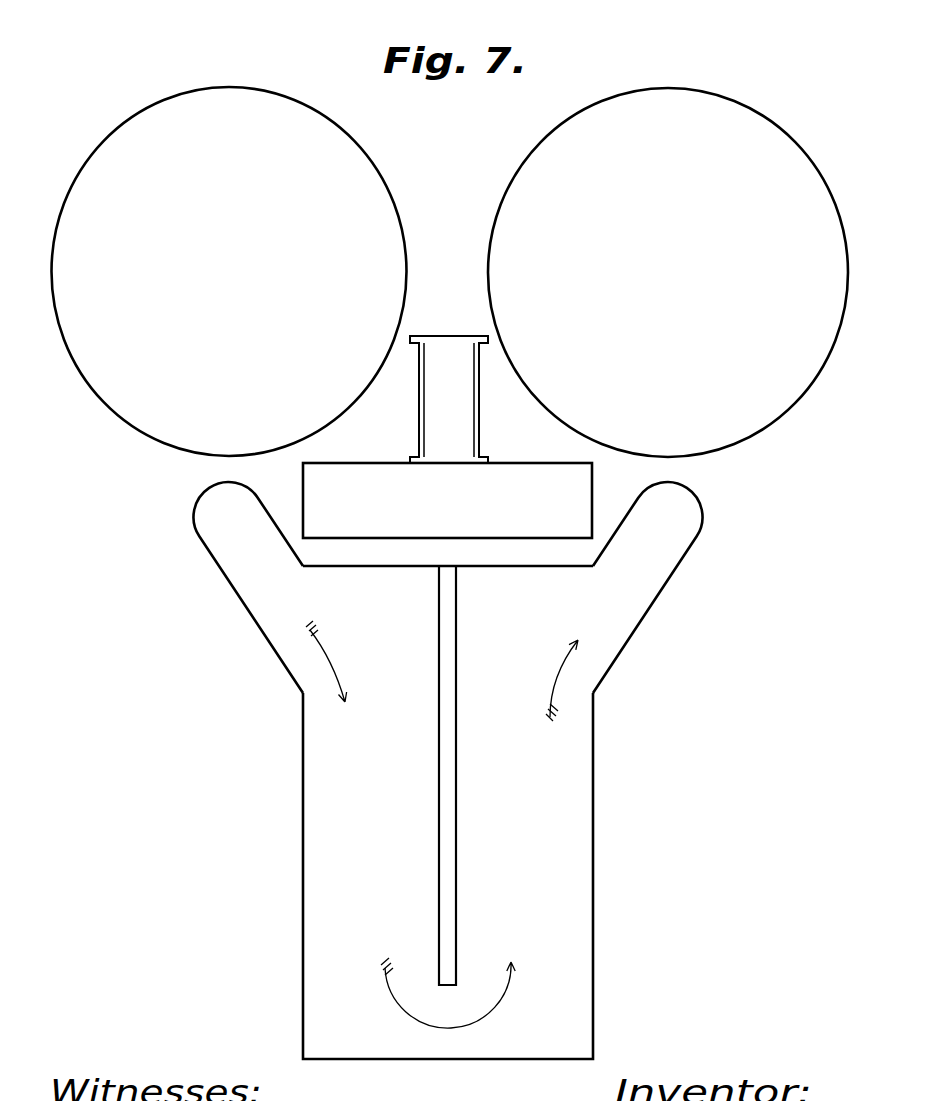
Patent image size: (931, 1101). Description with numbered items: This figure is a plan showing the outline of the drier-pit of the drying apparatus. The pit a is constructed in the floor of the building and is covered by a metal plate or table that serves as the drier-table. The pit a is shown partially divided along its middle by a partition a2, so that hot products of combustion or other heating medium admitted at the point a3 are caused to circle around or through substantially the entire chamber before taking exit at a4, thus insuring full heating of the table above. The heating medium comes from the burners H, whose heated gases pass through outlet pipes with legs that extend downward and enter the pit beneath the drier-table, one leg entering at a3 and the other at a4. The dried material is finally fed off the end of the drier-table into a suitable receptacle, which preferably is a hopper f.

The burner H is at (450, 272).
The hopper f is at (447, 500).
The pit a is at (448, 812).
The partition a2 is at (450, 683).
The admission point a3 is at (211, 513).
The exit point a4 is at (680, 512).